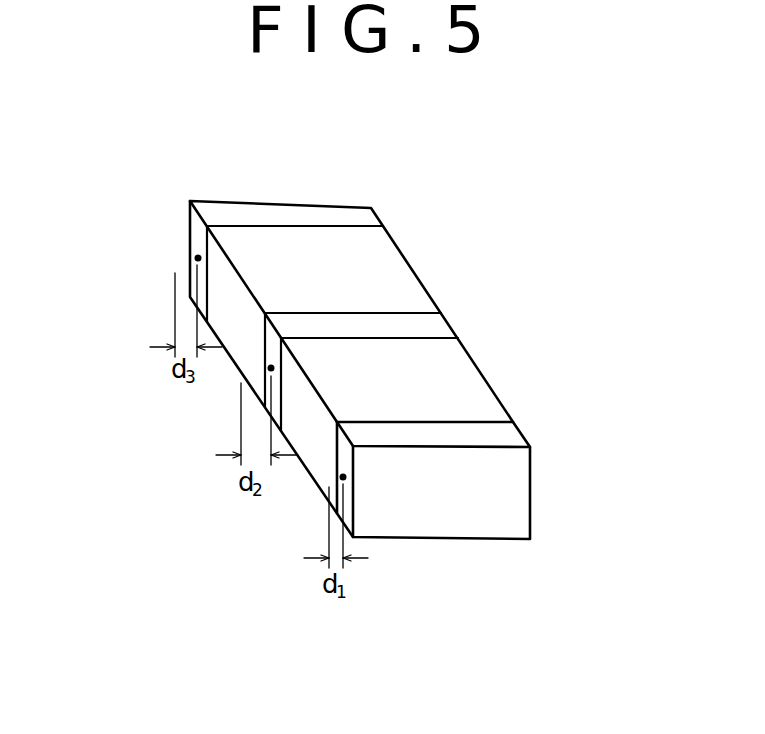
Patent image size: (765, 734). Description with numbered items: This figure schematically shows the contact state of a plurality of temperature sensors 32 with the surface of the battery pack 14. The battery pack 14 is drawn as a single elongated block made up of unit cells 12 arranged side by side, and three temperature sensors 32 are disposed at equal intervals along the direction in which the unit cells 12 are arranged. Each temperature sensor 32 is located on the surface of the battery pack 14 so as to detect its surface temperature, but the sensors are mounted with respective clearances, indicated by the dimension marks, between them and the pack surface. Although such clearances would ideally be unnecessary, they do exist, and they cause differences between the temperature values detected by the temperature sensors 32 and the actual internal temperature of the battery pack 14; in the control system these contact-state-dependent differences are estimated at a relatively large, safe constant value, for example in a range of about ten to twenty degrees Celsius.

The unit cell 12 is at (372, 209).
The battery pack 14 is at (416, 263).
The temperature sensor 32 is at (198, 258).